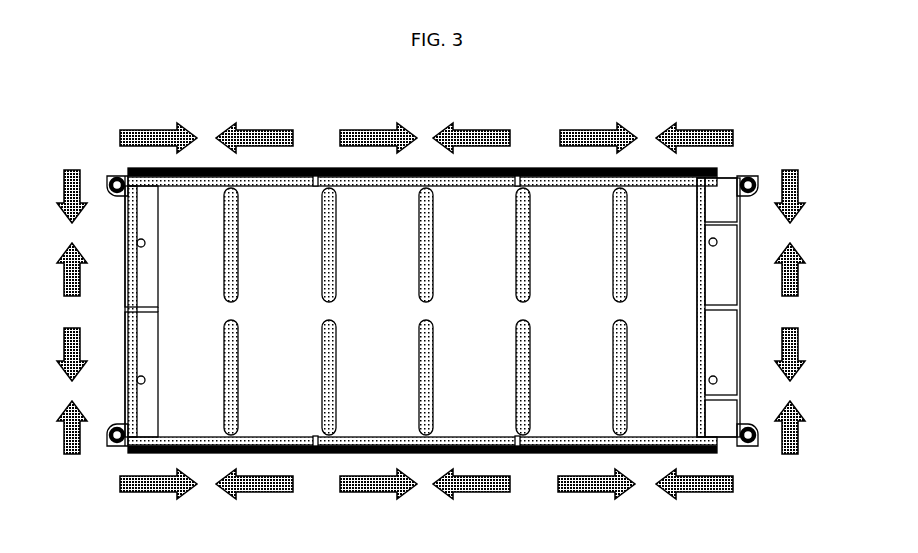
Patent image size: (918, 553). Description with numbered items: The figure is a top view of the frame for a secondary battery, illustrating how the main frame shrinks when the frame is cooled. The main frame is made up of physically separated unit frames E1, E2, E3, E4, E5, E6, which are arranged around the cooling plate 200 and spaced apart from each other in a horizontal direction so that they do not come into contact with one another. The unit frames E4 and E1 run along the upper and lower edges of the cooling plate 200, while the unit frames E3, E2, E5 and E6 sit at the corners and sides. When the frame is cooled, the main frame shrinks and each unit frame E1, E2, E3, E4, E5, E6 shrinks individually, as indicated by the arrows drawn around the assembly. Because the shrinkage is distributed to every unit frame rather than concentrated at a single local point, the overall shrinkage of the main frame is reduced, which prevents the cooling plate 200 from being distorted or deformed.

The cooling plate 200 is at (655, 408).
The unit frame E1 is at (505, 452).
The unit frame E2 is at (112, 446).
The unit frame E3 is at (113, 176).
The unit frame E4 is at (517, 170).
The unit frame E5 is at (740, 170).
The unit frame E6 is at (750, 442).